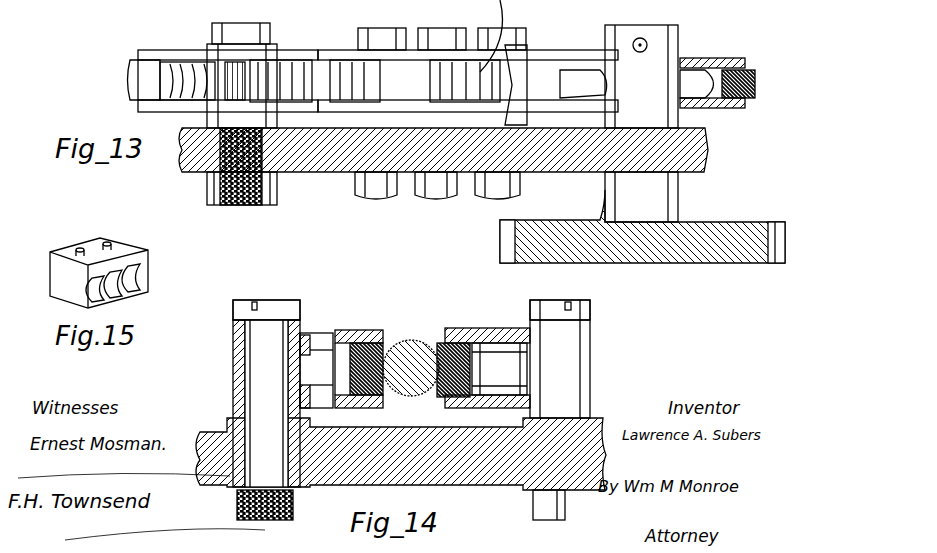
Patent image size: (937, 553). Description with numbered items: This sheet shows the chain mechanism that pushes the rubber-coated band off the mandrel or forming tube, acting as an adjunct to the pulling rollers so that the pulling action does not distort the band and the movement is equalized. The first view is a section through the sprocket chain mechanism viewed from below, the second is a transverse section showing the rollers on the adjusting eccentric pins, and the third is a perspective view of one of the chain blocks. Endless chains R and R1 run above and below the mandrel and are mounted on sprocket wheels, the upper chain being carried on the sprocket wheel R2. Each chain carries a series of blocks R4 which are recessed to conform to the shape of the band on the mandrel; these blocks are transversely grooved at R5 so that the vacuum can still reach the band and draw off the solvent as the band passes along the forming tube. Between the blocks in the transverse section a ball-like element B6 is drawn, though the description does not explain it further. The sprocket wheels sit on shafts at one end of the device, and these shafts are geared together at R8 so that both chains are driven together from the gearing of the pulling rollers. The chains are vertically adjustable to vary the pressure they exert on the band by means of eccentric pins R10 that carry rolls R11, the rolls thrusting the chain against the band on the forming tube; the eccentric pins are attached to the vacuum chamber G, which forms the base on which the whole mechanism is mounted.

In FIG. 13, the vacuum chamber G is at (320, 178).
In FIG. 14, the vacuum chamber G is at (368, 428).
In FIG. 14, the endless chain R is at (340, 330).
In FIG. 14, the endless chain R1 is at (487, 328).
In FIG. 13, the sprocket wheel R2 is at (705, 92).
In FIG. 13, the chain block R4 is at (130, 78).
In FIG. 15, the chain block R4 is at (144, 258).
In FIG. 14, the chain block R4 is at (375, 343).
In FIG. 13, the transverse groove R5 is at (290, 60).
In FIG. 15, the transverse groove R5 is at (148, 296).
In FIG. 13, the gear R8 is at (498, 240).
In FIG. 14, the eccentric pin R10 is at (294, 288).
In FIG. 14, the roll R11 is at (236, 332).
In FIG. 14, the ball B6 is at (412, 396).